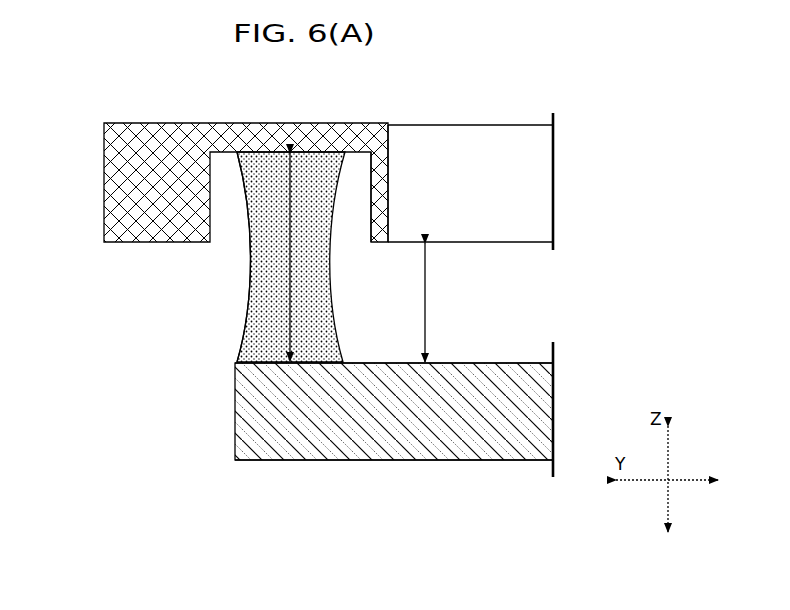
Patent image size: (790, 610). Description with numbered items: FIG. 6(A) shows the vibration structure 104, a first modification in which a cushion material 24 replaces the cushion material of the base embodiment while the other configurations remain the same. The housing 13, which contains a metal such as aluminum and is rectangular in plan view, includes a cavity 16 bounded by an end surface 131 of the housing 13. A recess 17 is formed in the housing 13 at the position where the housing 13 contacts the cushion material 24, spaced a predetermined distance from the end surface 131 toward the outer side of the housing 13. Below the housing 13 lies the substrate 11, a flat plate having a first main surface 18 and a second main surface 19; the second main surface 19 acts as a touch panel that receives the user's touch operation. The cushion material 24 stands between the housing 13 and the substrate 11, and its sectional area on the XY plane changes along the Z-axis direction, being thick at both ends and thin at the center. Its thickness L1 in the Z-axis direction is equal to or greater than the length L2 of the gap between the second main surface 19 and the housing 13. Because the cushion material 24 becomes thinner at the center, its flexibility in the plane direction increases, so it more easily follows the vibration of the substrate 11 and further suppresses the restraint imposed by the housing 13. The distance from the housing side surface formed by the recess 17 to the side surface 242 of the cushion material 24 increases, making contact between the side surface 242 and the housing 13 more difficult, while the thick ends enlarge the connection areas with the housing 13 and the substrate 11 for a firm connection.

The vibration structure 104 is at (117, 97).
The housing 13 is at (146, 122).
The end surface 131 is at (390, 160).
The cavity 16 is at (490, 157).
The cushion material 24 is at (288, 302).
The side surface 242 is at (252, 233).
The recess 17 is at (361, 232).
The substrate 11 is at (345, 462).
The second main surface 19 is at (520, 361).
The first main surface 18 is at (441, 464).
The thickness of the cushion material L1 is at (256, 314).
The length of the gap L2 is at (428, 297).